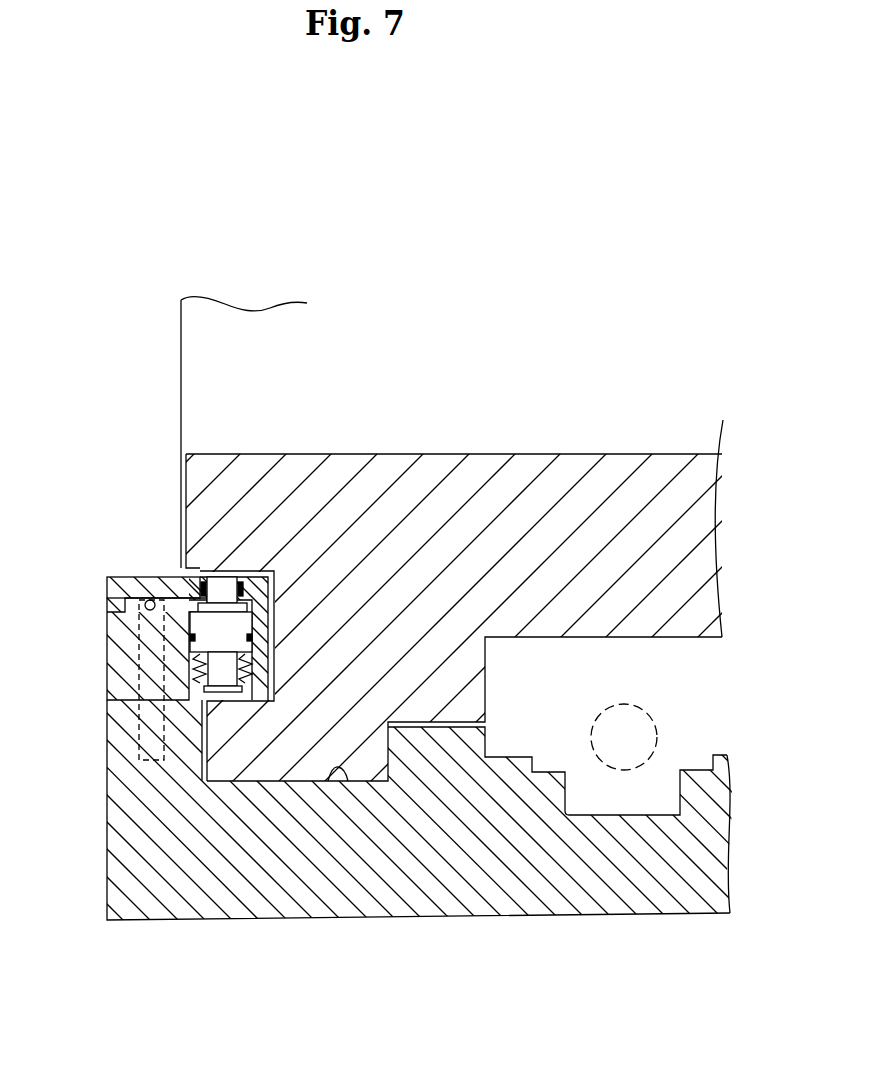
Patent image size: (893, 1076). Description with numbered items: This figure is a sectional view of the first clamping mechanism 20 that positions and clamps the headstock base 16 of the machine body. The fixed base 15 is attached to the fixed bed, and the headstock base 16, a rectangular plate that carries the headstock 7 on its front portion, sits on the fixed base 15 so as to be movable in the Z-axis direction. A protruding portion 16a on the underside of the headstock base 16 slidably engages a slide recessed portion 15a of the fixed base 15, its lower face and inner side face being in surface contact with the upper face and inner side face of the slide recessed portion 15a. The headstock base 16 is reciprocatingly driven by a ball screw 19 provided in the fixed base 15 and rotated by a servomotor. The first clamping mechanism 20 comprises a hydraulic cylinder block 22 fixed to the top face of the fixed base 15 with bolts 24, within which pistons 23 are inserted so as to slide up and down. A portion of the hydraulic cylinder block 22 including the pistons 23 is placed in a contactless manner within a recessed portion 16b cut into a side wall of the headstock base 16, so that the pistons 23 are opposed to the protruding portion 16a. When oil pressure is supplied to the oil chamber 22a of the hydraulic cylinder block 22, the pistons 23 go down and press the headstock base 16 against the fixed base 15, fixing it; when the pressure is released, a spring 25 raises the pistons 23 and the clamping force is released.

The headstock 7 is at (181, 365).
The fixed base 15 is at (100, 862).
The slide recessed portion 15a is at (340, 781).
The headstock base 16 is at (728, 510).
The protruding portion 16a is at (200, 781).
The recessed portion 16b is at (200, 577).
The ball screw 19 is at (652, 715).
The first clamping mechanism 20 is at (70, 540).
The hydraulic cylinder block 22 is at (107, 637).
The oil chamber 22a is at (275, 578).
The piston 23 is at (252, 630).
The bolt 24 is at (139, 662).
The spring 25 is at (250, 680).